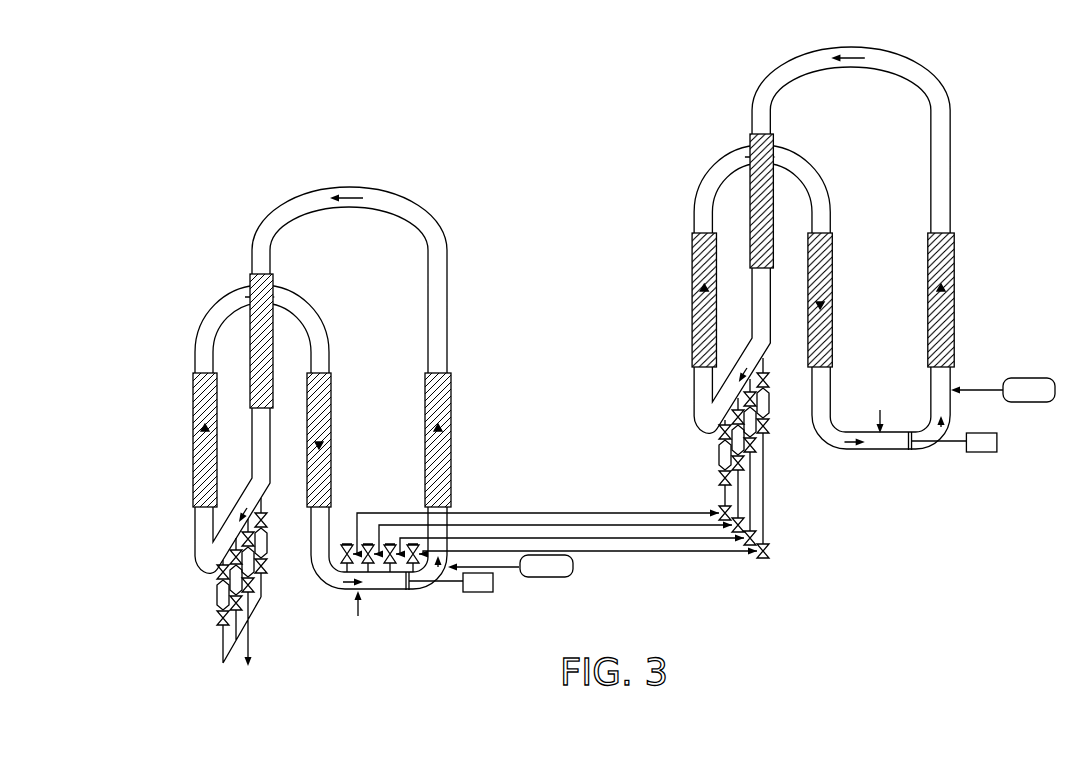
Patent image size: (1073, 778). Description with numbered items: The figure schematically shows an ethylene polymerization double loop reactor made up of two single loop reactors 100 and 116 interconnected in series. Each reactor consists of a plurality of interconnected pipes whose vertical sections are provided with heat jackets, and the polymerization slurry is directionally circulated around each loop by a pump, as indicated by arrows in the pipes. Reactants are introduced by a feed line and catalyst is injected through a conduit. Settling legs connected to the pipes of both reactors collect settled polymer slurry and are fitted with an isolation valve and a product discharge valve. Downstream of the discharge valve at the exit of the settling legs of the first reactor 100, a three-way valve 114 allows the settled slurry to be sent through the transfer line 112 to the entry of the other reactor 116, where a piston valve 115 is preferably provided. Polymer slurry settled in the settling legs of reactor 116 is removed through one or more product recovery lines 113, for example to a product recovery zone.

The single loop reactor 100 is at (998, 104).
The transfer line 112 is at (581, 513).
The product recovery lines 113 is at (242, 631).
The three-way valve 114 is at (770, 553).
The piston valve 115 is at (347, 543).
The single loop reactor 116 is at (487, 235).